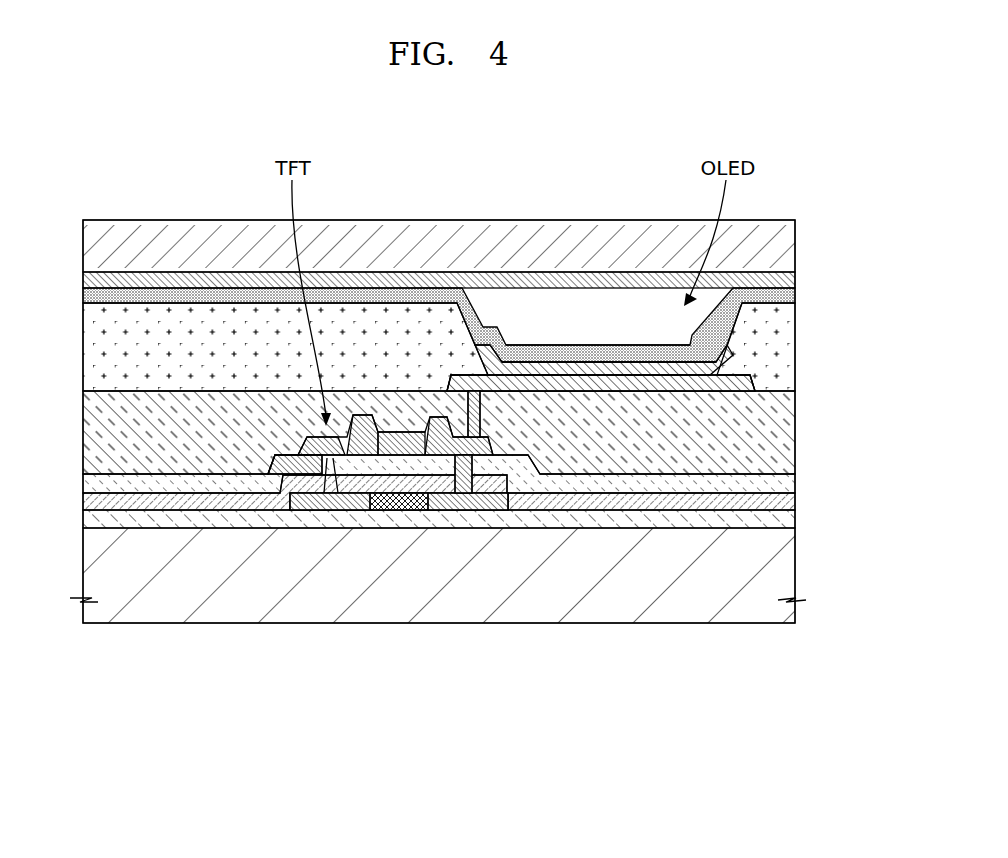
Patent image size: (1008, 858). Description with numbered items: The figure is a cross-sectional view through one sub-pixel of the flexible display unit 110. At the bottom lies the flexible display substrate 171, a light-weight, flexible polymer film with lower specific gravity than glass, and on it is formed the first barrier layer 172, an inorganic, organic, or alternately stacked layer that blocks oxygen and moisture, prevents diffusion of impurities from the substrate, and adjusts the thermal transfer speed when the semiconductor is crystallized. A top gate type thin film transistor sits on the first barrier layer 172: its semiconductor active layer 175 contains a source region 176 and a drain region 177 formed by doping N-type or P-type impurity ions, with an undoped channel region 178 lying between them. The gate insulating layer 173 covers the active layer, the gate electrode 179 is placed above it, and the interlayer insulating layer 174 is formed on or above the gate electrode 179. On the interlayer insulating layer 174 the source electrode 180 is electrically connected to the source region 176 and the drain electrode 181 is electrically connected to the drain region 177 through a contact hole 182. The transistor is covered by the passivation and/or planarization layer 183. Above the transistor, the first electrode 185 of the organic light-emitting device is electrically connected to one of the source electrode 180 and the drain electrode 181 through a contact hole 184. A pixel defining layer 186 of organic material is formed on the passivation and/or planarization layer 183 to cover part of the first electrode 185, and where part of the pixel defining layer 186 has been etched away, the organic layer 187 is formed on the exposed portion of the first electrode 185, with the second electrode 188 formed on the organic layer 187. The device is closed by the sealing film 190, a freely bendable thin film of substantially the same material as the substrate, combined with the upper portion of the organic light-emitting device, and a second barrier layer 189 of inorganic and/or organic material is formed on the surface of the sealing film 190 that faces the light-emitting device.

The flexible display unit 110 is at (482, 372).
The flexible display substrate 171 is at (782, 568).
The first barrier layer 172 is at (790, 527).
The gate insulating layer 173 is at (795, 500).
The interlayer insulating layer 174 is at (790, 473).
The semiconductor active layer 175 is at (399, 611).
The source region 176 is at (343, 492).
The drain region 177 is at (448, 506).
The channel region 178 is at (402, 506).
The gate electrode 179 is at (378, 467).
The source electrode 180 is at (327, 470).
The drain electrode 181 is at (463, 460).
The contact hole 182 is at (480, 460).
The passivation and/or planarization layer 183 is at (790, 432).
The contact hole 184 is at (483, 408).
The first electrode 185 is at (596, 372).
The pixel defining layer 186 is at (788, 346).
The organic layer 187 is at (645, 358).
The second electrode 188 is at (420, 300).
The second barrier layer 189 is at (792, 284).
The sealing film 190 is at (788, 247).